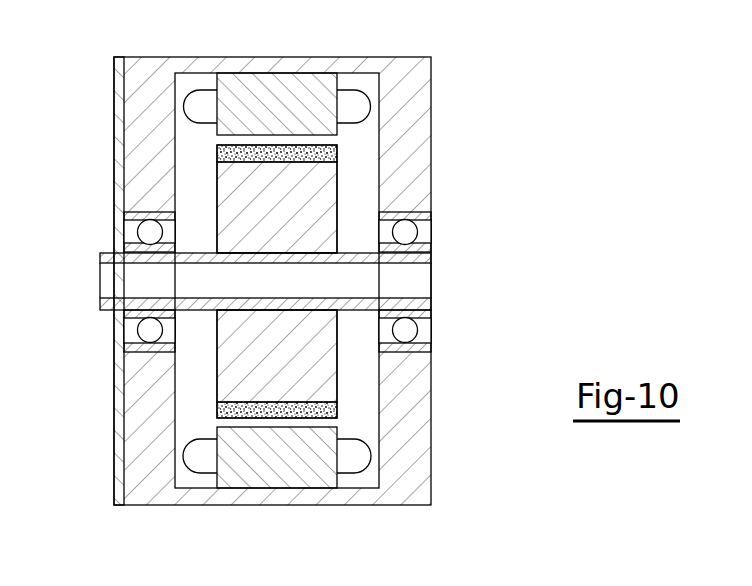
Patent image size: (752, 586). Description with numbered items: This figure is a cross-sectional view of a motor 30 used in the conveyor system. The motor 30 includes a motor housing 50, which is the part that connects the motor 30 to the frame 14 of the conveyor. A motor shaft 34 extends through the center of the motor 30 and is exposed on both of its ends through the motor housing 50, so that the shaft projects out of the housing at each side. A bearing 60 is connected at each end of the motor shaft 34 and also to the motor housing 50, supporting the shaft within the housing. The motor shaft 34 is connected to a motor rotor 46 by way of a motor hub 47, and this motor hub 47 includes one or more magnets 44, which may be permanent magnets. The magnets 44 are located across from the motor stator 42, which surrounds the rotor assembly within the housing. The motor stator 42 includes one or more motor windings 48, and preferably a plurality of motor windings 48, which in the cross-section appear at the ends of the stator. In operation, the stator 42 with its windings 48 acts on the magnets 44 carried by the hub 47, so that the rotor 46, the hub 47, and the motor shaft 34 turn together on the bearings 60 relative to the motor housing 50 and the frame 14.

The frame 14 is at (118, 88).
The motor 30 is at (391, 57).
The motor shaft 34 is at (130, 298).
The motor stator 42 is at (290, 105).
The magnets 44 is at (325, 410).
The motor rotor 46 is at (341, 367).
The motor hub 47 is at (315, 190).
The motor windings 48 is at (203, 105).
The motor housing 50 is at (400, 487).
The bearing 60 is at (150, 232).